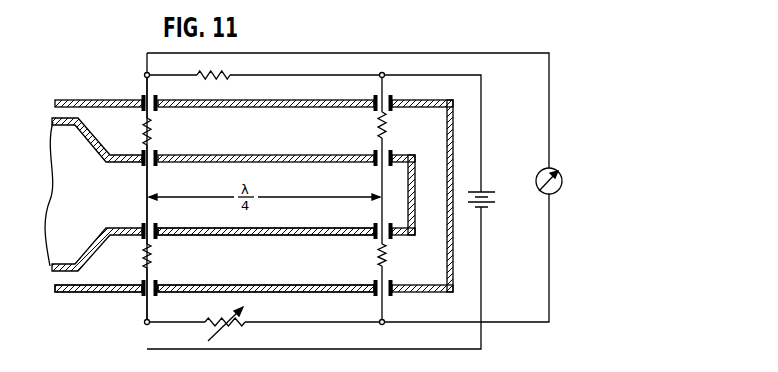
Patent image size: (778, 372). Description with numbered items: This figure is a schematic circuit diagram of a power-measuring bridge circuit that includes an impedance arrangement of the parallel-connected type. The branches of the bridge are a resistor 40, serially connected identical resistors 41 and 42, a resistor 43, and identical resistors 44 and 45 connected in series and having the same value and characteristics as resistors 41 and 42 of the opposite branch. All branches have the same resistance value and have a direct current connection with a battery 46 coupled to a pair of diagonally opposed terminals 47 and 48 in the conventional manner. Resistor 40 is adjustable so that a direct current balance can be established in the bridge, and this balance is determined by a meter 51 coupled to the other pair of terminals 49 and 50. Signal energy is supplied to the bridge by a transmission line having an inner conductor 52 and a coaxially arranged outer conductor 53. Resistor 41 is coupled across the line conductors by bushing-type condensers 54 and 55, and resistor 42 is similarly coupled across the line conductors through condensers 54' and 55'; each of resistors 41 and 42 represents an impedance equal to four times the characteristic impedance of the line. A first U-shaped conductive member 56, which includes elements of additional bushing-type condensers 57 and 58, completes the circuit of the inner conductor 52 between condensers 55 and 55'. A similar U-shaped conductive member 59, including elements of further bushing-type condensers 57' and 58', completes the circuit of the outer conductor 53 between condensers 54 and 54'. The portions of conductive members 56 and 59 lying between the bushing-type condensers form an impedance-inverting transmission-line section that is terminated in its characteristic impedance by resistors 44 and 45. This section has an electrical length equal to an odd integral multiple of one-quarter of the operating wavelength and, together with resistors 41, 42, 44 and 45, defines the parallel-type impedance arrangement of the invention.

The resistor 40 is at (238, 328).
The resistor 41 is at (149, 247).
The resistor 42 is at (150, 131).
The resistor 43 is at (224, 73).
The resistor 44 is at (383, 125).
The resistor 45 is at (385, 260).
The battery 46 is at (483, 195).
The terminal 47 is at (382, 75).
The terminal 48 is at (145, 322).
The terminal 49 is at (146, 75).
The terminal 50 is at (383, 324).
The meter 51 is at (563, 175).
The inner conductor 52 is at (50, 189).
The outer conductor 53 is at (55, 283).
The bushing-type condenser 54 is at (168, 279).
The bushing-type condenser 54' is at (169, 96).
The bushing-type condenser 55 is at (168, 221).
The bushing-type condenser 55' is at (169, 166).
The U-shaped conductive member 56 is at (301, 227).
The bushing-type condenser 57 is at (368, 222).
The bushing-type condenser 57' is at (401, 297).
The bushing-type condenser 58 is at (372, 166).
The bushing-type condenser 58' is at (403, 93).
The U-shaped conductive member 59 is at (286, 284).